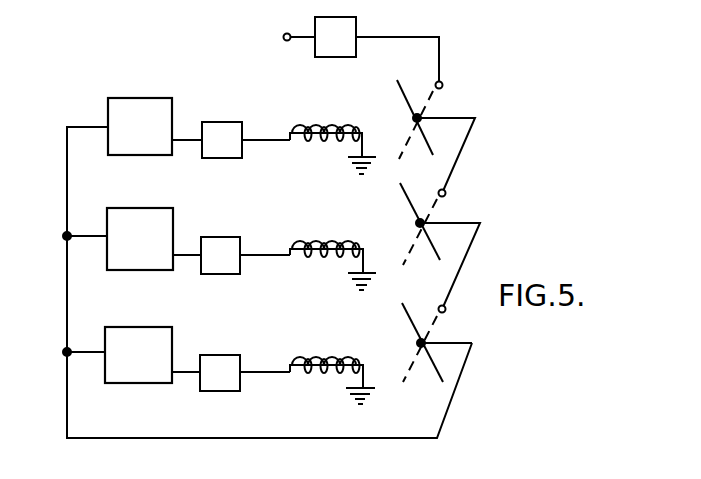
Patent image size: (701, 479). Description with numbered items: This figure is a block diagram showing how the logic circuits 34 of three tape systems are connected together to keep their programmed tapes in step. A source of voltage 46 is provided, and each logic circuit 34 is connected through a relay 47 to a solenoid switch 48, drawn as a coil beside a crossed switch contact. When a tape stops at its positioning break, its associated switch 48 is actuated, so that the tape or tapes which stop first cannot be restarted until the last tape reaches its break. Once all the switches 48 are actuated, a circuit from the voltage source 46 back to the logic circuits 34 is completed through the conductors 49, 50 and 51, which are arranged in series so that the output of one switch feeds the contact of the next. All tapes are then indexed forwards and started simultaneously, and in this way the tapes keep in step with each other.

The logic circuit 34 is at (139, 240).
The source of voltage 46 is at (363, 53).
The relay 47 is at (231, 256).
The solenoid switch 48 is at (333, 252).
The conductor 49 is at (461, 155).
The conductor 50 is at (465, 258).
The conductor 51 is at (455, 395).